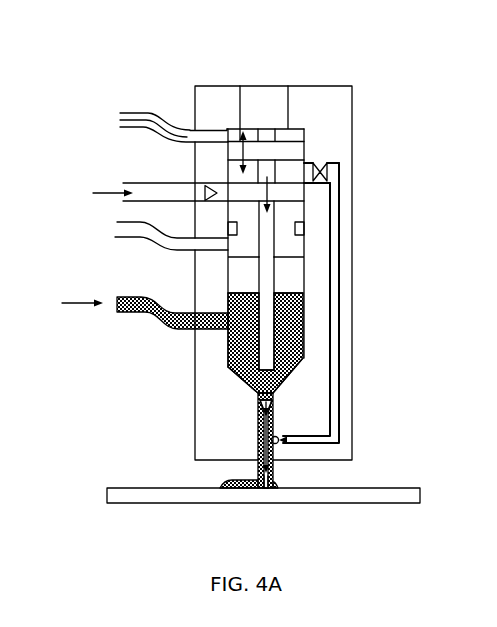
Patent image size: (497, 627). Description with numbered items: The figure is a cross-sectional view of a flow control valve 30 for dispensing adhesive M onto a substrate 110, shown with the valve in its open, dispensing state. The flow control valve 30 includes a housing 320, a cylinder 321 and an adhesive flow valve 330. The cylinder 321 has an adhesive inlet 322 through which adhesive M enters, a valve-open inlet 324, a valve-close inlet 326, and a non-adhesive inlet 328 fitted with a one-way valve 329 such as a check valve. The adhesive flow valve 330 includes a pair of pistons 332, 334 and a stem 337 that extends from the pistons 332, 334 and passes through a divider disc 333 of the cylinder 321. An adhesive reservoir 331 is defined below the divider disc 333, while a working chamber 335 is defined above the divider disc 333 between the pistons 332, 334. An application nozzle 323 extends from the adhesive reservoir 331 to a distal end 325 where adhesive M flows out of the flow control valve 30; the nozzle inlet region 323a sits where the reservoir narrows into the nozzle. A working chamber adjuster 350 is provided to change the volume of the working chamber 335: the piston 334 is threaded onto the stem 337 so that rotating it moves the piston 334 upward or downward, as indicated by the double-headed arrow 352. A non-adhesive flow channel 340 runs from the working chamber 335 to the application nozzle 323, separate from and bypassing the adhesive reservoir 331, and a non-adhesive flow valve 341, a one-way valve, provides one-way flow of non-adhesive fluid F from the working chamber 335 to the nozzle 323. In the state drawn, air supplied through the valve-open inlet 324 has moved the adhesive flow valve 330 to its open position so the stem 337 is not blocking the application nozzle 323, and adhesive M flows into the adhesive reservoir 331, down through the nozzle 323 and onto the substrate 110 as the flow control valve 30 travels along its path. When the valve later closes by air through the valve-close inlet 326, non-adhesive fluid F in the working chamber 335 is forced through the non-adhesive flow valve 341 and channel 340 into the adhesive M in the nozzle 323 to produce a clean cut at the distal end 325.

The flow control valve 30 is at (378, 66).
The substrate 110 is at (146, 507).
The housing 320 is at (289, 80).
The cylinder 321 is at (226, 353).
The adhesive inlet 322 is at (200, 318).
The application nozzle 323 is at (258, 443).
The nozzle inlet 323a is at (258, 410).
The valve-open inlet 324 is at (207, 243).
The distal end 325 is at (277, 463).
The valve-close inlet 326 is at (190, 134).
The non-adhesive inlet 328 is at (178, 192).
The one-way valve 329 is at (200, 198).
The adhesive flow valve 330 is at (310, 147).
The adhesive reservoir 331 is at (293, 352).
The piston 332 is at (286, 148).
The divider disc 333 is at (290, 278).
The piston 334 is at (292, 197).
The working chamber 335 is at (282, 173).
The stem 337 is at (270, 248).
The non-adhesive flow channel 340 is at (340, 310).
The non-adhesive flow valve 341 is at (323, 175).
The working chamber adjuster 350 is at (236, 90).
The double-headed arrow 352 is at (243, 141).
The non-adhesive fluid F is at (286, 437).
The adhesive M is at (223, 485).